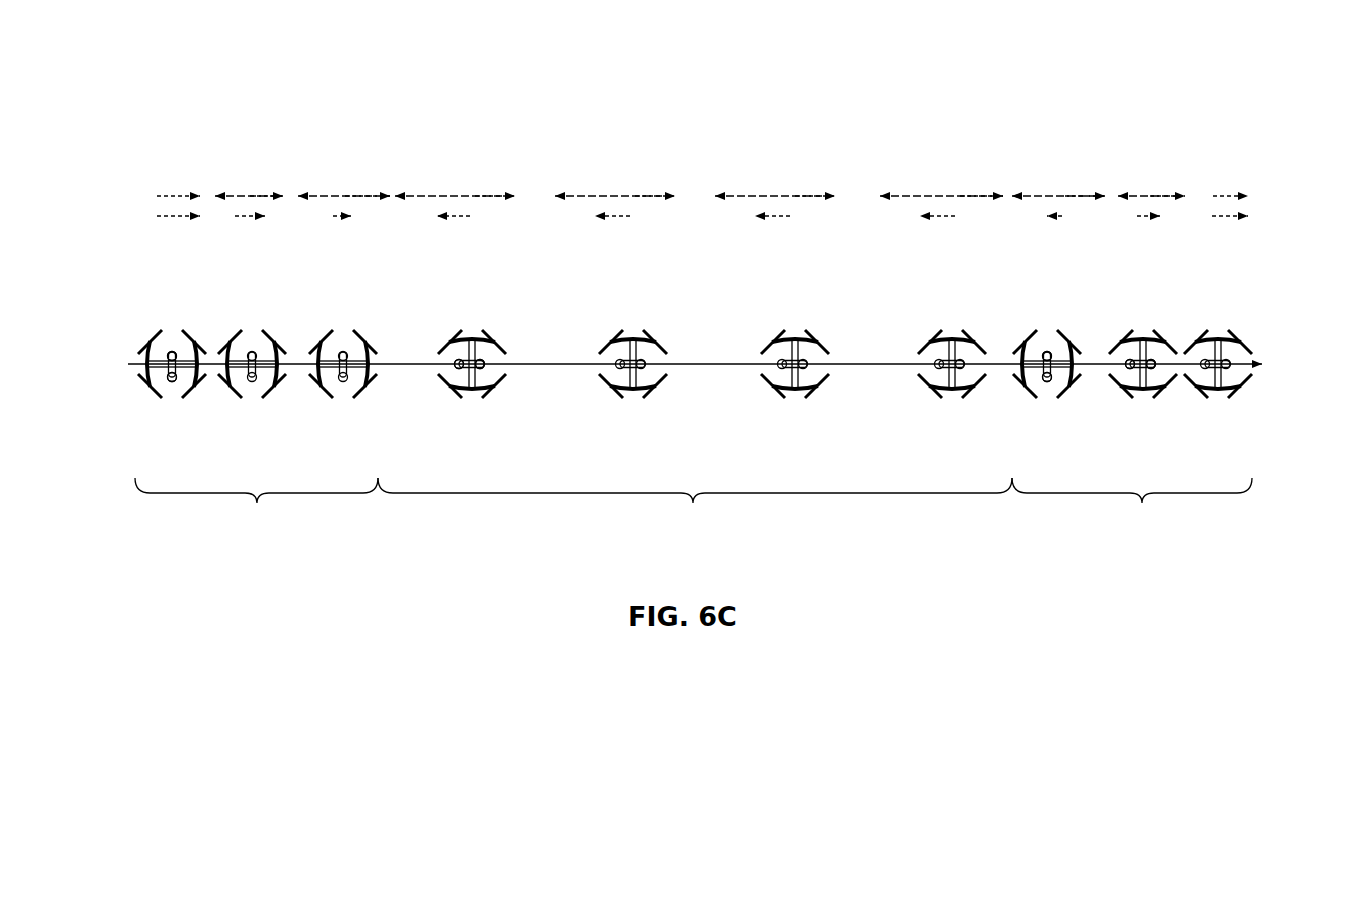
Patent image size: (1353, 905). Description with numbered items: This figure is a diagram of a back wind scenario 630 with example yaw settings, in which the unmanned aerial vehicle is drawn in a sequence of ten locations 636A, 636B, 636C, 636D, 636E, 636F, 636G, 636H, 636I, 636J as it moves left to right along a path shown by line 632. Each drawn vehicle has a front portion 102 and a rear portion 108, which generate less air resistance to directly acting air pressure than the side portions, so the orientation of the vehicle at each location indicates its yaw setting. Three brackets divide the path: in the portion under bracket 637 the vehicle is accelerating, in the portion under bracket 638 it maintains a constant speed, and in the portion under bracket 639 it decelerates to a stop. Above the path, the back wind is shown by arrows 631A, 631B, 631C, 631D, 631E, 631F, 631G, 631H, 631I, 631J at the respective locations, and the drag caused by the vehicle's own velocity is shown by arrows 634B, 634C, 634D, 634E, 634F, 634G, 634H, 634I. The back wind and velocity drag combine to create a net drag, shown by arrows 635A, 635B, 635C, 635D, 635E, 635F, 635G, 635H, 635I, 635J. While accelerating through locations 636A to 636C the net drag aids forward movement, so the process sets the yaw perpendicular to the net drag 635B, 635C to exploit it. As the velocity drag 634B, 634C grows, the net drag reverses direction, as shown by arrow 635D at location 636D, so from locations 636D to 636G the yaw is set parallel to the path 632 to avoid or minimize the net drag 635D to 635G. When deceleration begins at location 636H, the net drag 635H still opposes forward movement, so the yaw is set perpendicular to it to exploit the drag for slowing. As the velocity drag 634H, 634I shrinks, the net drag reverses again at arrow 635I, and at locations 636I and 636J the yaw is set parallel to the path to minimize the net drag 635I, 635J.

The aerial vehicle system 630 is at (1240, 115).
The path 632 is at (130, 358).
The front portion 102 is at (166, 392).
The rear portion 108 is at (175, 347).
The back wind arrow 631A is at (172, 194).
The back wind arrow 631B is at (257, 194).
The back wind arrow 631C is at (357, 194).
The back wind arrow 631D is at (490, 194).
The back wind arrow 631E is at (648, 194).
The back wind arrow 631F is at (813, 194).
The back wind arrow 631G is at (975, 194).
The back wind arrow 631H is at (1077, 194).
The back wind arrow 631I is at (1158, 194).
The back wind arrow 631J is at (1235, 194).
The velocity drag arrow 634B is at (225, 194).
The velocity drag arrow 634C is at (323, 194).
The velocity drag arrow 634D is at (445, 194).
The velocity drag arrow 634E is at (595, 194).
The velocity drag arrow 634F is at (753, 194).
The velocity drag arrow 634G is at (927, 194).
The velocity drag arrow 634H is at (1035, 194).
The velocity drag arrow 634I is at (1132, 194).
The net drag arrow 635A is at (175, 219).
The net drag arrow 635B is at (248, 219).
The net drag arrow 635C is at (343, 219).
The net drag arrow 635D is at (453, 219).
The net drag arrow 635E is at (611, 219).
The net drag arrow 635F is at (777, 219).
The net drag arrow 635G is at (942, 219).
The net drag arrow 635H is at (1055, 219).
The net drag arrow 635I is at (1148, 219).
The net drag arrow 635J is at (1230, 219).
The UAV location 636A is at (188, 388).
The UAV location 636B is at (277, 390).
The UAV location 636C is at (372, 385).
The UAV location 636D is at (493, 388).
The UAV location 636E is at (654, 390).
The UAV location 636F is at (812, 382).
The UAV location 636G is at (928, 388).
The UAV location 636H is at (1023, 387).
The UAV location 636I is at (1123, 392).
The UAV location 636J is at (1236, 388).
The bracket 637 is at (257, 503).
The bracket 638 is at (693, 503).
The bracket 639 is at (1142, 503).